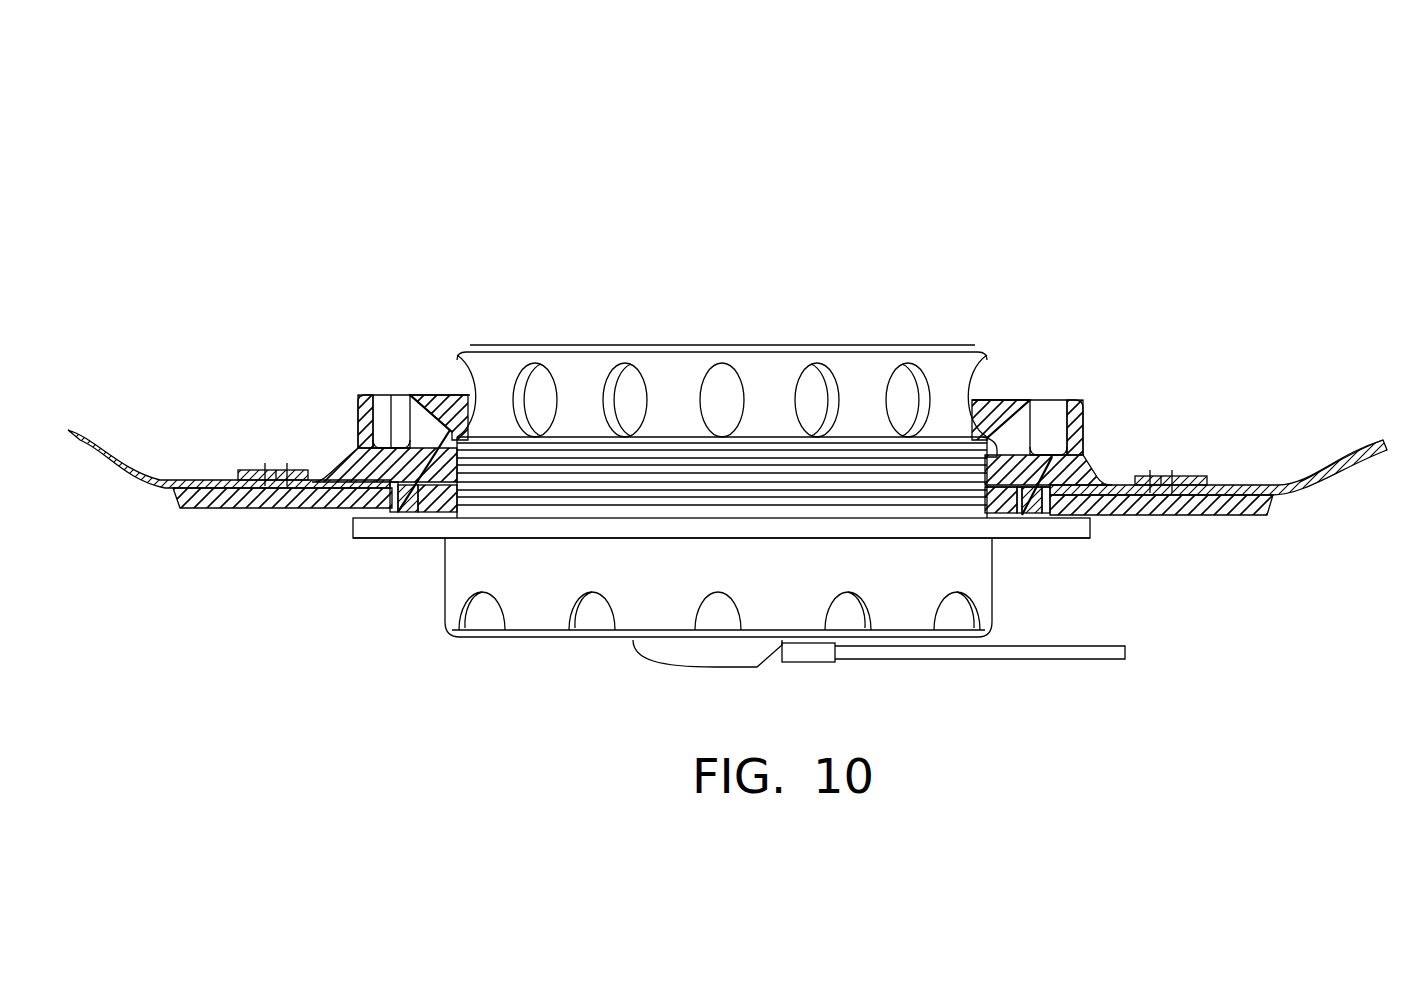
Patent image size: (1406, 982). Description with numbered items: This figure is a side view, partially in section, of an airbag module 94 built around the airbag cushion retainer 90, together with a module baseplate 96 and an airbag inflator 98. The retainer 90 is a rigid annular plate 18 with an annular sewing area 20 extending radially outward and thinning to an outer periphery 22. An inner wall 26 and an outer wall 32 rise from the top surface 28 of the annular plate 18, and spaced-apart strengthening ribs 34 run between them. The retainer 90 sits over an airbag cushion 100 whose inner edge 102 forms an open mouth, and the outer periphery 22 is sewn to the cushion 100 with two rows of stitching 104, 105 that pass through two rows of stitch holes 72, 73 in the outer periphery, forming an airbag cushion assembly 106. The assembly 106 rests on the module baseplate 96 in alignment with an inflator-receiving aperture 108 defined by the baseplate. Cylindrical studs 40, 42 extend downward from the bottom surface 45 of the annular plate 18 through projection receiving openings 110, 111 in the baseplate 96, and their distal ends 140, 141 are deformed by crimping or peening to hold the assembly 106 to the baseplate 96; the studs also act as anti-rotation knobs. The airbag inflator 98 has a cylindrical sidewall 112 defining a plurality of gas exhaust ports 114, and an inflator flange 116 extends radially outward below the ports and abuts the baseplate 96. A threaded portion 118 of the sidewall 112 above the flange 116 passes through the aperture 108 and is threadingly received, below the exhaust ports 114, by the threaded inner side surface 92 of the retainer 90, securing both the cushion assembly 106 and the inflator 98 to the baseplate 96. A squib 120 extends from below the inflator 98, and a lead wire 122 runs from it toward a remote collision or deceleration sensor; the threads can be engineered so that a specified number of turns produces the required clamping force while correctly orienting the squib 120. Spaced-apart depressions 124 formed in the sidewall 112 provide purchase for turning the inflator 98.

The airbag module 94 is at (1068, 232).
The airbag inflator 98 is at (657, 336).
The gas exhaust ports 114 is at (535, 363).
The threaded portion of inflator sidewall 118 is at (540, 492).
The threaded inner side surface 92 is at (963, 395).
The airbag cushion retainer 90 is at (993, 384).
The outer wall 32 is at (360, 398).
The strengthening ribs 34 is at (430, 410).
The inner wall 26 is at (465, 400).
The annular plate 18 is at (392, 438).
The annular sewing area 20 is at (350, 466).
The top surface 28 is at (398, 498).
The inflator-receiving aperture 108 is at (1022, 515).
The projection receiving opening 111 is at (393, 500).
The distal end of stud 141 is at (418, 515).
The cylindrical stud 42 is at (432, 512).
The cylindrical stud 40 is at (1030, 514).
The projection receiving opening 110 is at (1046, 505).
The distal end of stud 140 is at (1088, 530).
The inflator flange 116 is at (727, 537).
The inner edge 102 is at (990, 495).
The cylindrical sidewall 112 is at (668, 573).
The depressions 124 is at (450, 622).
The squib 120 is at (715, 667).
The lead wire 122 is at (1030, 659).
The outer periphery 22 is at (245, 470).
The bottom surface 45 is at (372, 489).
The stitch holes 73 is at (262, 468).
The row of stitching 104 is at (265, 463).
The stitch holes 72 is at (288, 465).
The row of stitching 105 is at (284, 466).
The airbag cushion assembly 106 is at (1272, 472).
The airbag cushion 100 is at (1329, 450).
The module baseplate 96 is at (1208, 526).